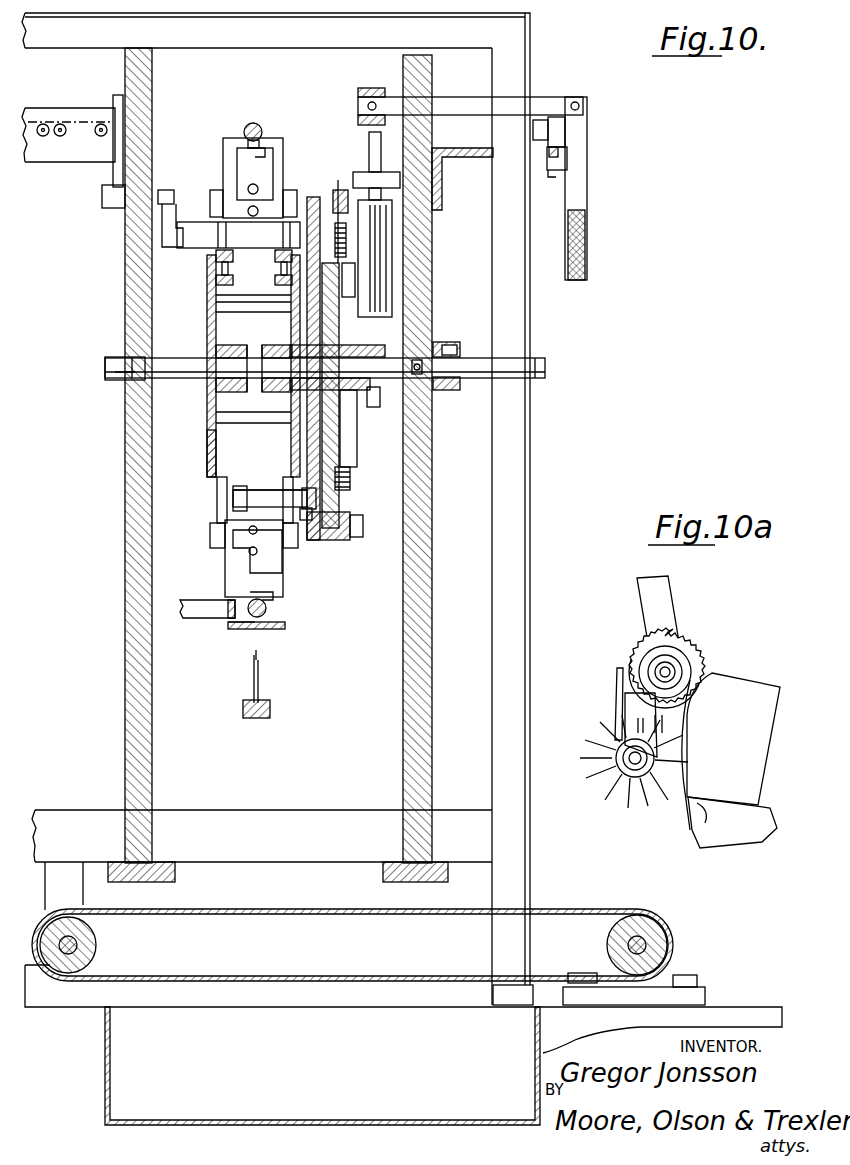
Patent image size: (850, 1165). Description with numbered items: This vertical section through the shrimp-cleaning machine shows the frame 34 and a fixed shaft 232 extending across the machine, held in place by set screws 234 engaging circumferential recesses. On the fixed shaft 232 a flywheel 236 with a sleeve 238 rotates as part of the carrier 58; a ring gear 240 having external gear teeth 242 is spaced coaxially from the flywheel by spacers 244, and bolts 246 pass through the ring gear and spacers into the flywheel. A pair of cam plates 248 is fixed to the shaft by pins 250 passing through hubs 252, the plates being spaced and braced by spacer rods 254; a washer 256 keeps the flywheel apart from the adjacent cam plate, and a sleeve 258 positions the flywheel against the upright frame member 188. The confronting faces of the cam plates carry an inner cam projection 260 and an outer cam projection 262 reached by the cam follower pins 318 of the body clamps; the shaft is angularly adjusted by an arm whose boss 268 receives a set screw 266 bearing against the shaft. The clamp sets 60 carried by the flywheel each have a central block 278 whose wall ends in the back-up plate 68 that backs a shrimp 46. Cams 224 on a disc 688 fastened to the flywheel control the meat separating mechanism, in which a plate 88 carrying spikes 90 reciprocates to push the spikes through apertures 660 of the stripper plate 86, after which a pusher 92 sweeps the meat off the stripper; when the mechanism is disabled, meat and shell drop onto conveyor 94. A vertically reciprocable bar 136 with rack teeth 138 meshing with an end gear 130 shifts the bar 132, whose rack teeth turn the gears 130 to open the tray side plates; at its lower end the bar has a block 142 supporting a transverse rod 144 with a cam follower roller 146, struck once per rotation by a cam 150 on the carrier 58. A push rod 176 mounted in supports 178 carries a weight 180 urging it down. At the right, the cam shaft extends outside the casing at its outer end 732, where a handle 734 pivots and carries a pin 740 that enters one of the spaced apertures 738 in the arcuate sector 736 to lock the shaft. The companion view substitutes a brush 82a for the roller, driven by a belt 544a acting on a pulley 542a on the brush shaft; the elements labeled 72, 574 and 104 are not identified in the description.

In FIG. 10, the vertically reciprocable bar 136 is at (108, 43).
In FIG. 10, the frame 34 is at (495, 575).
In FIG. 10, the cams 224 is at (372, 250).
In FIG. 10, the foot block 574 is at (173, 862).
In FIG. 10, the conveyor 94 is at (338, 915).
In FIG. 10, the tank 104 is at (120, 1066).
In FIG. 10, the gears 130 is at (62, 118).
In FIG. 10, the bar 132 is at (100, 145).
In FIG. 10, the rack teeth 138 is at (113, 105).
In FIG. 10, the block 142 is at (102, 199).
In FIG. 10, the cam follower roller 146 is at (168, 192).
In FIG. 10, the transverse rod 144 is at (153, 195).
In FIG. 10, the cam 150 is at (178, 228).
In FIG. 10, the clamp sets 60 is at (222, 175).
In FIG. 10A, the clamp sets 60 is at (800, 765).
In FIG. 10, the shrimp 46 is at (253, 123).
In FIG. 10A, the shrimp 46 is at (692, 720).
In FIG. 10, the back-up plate 68 is at (268, 148).
In FIG. 10, the flywheel 236 is at (312, 200).
In FIG. 10, the external gear teeth 242 is at (340, 195).
In FIG. 10, the ring gear 240 is at (390, 173).
In FIG. 10, the supports 178 is at (390, 170).
In FIG. 10, the weight 180 is at (367, 308).
In FIG. 10, the push rod 176 is at (380, 133).
In FIG. 10, the upstanding frame member 188 is at (413, 187).
In FIG. 10, the outer end of shaft 732 is at (553, 100).
In FIG. 10, the handle 734 is at (587, 247).
In FIG. 10, the sector 736 is at (553, 135).
In FIG. 10, the pin 740 is at (565, 162).
In FIG. 10, the apertures 738 is at (553, 175).
In FIG. 10, the hubs 252 is at (210, 337).
In FIG. 10, the central block 278 is at (225, 257).
In FIG. 10, the outer cam projection 262 is at (290, 262).
In FIG. 10, the inner cam projection 260 is at (250, 298).
In FIG. 10, the spacer rods 254 is at (228, 322).
In FIG. 10, the pins 250 is at (226, 392).
In FIG. 10, the cam plates 248 is at (210, 447).
In FIG. 10, the fixed shaft 232 is at (546, 362).
In FIG. 10, the set screws 234 is at (118, 382).
In FIG. 10, the sleeve 258 is at (393, 345).
In FIG. 10, the set screw 266 is at (445, 343).
In FIG. 10, the boss 268 is at (465, 386).
In FIG. 10, the sleeve 238 is at (358, 393).
In FIG. 10, the washer 256 is at (355, 450).
In FIG. 10, the cam follower pins 318 is at (283, 456).
In FIG. 10, the disc 688 is at (283, 476).
In FIG. 10, the spacers 244 is at (330, 540).
In FIG. 10, the bolts 246 is at (363, 535).
In FIG. 10, the pusher 92 is at (215, 600).
In FIG. 10, the stripper plate 86 is at (282, 629).
In FIG. 10, the apertures 660 is at (247, 630).
In FIG. 10, the spikes 90 is at (258, 680).
In FIG. 10, the plate 88 is at (270, 701).
In FIG. 10, the carrier 58 is at (335, 586).
In FIG. 10A, the gear 72 is at (680, 656).
In FIG. 10A, the belt 544a is at (618, 707).
In FIG. 10A, the pulley 542a is at (603, 779).
In FIG. 10A, the brush 82a is at (657, 793).